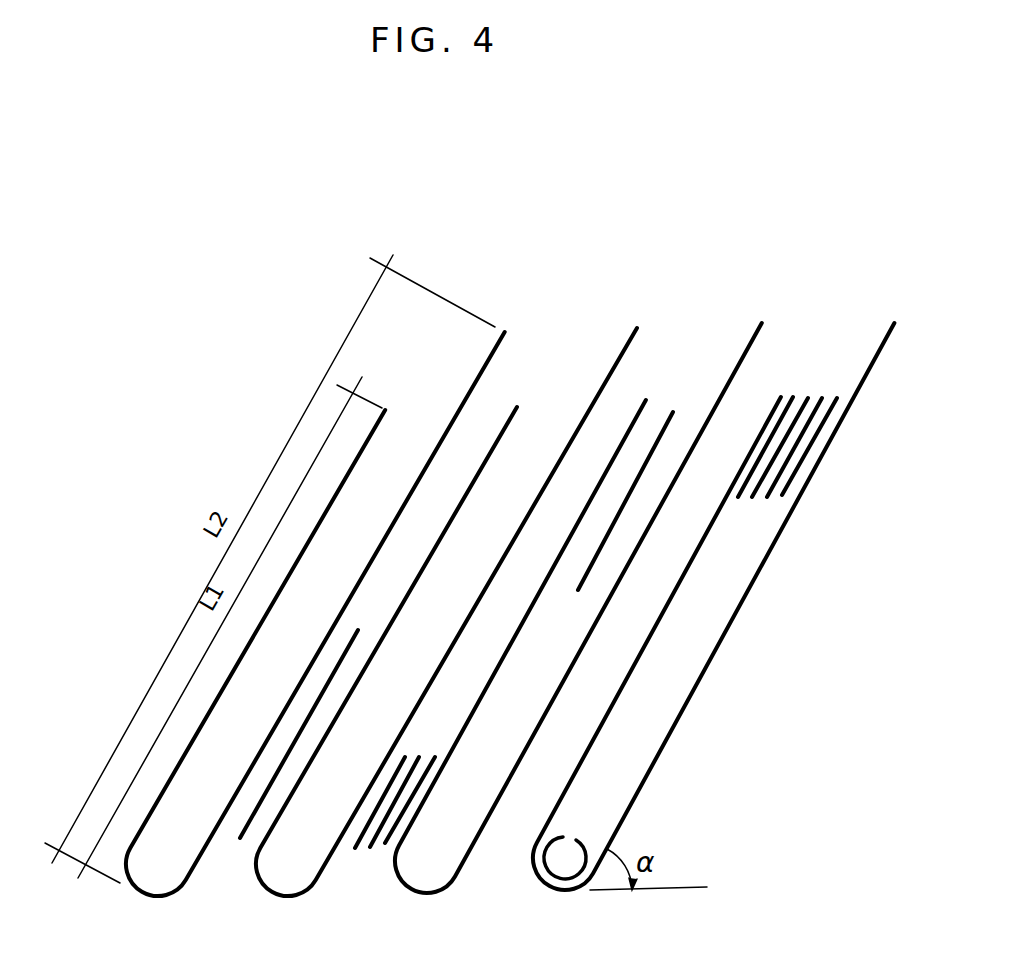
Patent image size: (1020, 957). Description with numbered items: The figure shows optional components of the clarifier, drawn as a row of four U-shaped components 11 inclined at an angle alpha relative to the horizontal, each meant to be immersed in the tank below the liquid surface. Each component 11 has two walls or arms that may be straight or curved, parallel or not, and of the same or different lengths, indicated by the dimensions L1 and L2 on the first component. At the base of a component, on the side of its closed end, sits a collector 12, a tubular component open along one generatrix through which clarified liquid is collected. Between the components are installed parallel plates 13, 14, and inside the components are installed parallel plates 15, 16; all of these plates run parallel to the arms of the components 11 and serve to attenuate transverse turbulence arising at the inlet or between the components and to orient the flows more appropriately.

The U-shaped component 11 is at (558, 908).
The collector 12 is at (543, 860).
The parallel plate 13 is at (267, 790).
The parallel plates 14 is at (388, 787).
The parallel plate 15 is at (648, 448).
The parallel plates 16 is at (768, 447).